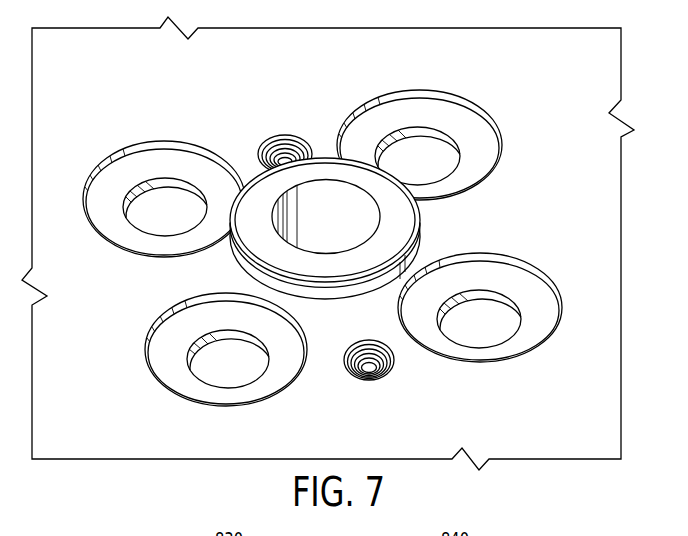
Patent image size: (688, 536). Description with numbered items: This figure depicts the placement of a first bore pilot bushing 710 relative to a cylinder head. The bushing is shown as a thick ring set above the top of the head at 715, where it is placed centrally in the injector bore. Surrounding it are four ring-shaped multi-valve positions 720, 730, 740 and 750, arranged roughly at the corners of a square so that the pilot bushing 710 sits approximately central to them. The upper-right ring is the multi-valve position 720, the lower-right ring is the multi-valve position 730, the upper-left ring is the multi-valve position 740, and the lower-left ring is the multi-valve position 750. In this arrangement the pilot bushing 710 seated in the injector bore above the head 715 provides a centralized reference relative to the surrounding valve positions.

The first bore pilot bushing 710 is at (327, 160).
The top of the head 715 is at (317, 202).
The multi-valve position 720 is at (451, 120).
The multi-valve position 730 is at (512, 280).
The multi-valve position 740 is at (140, 167).
The multi-valve position 750 is at (173, 375).